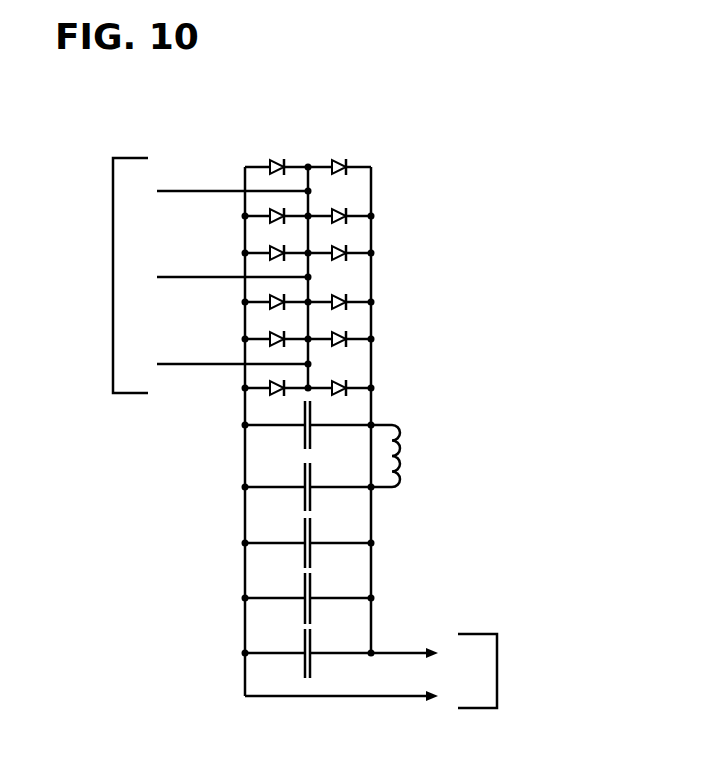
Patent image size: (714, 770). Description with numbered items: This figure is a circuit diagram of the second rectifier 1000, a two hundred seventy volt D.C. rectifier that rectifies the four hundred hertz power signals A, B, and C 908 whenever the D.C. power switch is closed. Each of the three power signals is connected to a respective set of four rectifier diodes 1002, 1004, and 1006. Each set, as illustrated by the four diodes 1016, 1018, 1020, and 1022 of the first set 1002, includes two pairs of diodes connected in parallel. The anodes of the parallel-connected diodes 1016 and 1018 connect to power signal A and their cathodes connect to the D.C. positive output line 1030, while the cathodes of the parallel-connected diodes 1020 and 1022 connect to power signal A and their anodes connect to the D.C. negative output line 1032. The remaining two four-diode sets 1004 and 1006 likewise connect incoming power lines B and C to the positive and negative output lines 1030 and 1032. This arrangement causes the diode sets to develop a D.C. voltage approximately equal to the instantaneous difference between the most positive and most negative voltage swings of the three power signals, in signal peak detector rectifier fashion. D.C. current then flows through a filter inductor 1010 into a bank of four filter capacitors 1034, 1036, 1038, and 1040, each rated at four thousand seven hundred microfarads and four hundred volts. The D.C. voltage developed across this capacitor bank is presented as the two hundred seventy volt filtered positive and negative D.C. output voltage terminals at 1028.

The second rectifier 1000 is at (310, 82).
The set of four rectifier diodes 1002 is at (232, 170).
The rectifier diode 1020 is at (270, 159).
The rectifier diode 1016 is at (333, 160).
The rectifier diode 1018 is at (335, 208).
The rectifier diode 1022 is at (270, 222).
The set of four rectifier diodes 1004 is at (360, 283).
The D.C. positive output line 1030 is at (372, 308).
The set of four rectifier diodes 1006 is at (360, 370).
The D.C. negative output line 1032 is at (244, 301).
The filter inductor 1010 is at (400, 447).
The filter capacitor 1034 is at (313, 497).
The filter capacitor 1036 is at (303, 553).
The filter capacitor 1038 is at (310, 620).
The filter capacitor 1040 is at (303, 665).
The power signals A, B, and C 908 is at (113, 383).
The filtered D.C. output voltage V2+ and V2- 1028 is at (497, 671).